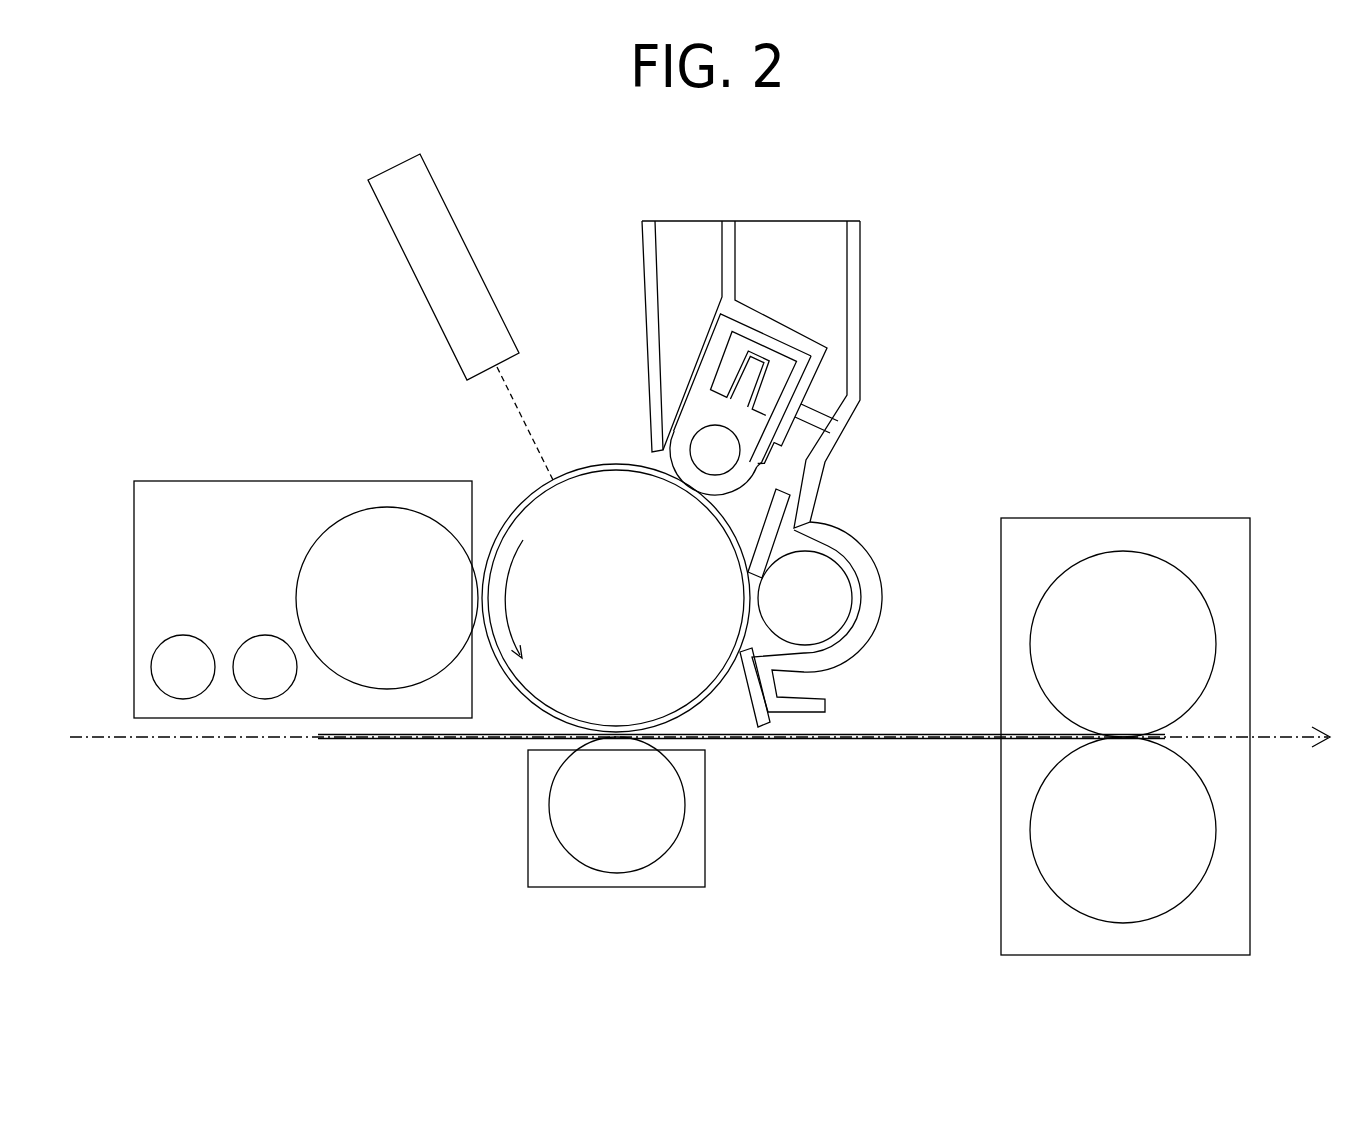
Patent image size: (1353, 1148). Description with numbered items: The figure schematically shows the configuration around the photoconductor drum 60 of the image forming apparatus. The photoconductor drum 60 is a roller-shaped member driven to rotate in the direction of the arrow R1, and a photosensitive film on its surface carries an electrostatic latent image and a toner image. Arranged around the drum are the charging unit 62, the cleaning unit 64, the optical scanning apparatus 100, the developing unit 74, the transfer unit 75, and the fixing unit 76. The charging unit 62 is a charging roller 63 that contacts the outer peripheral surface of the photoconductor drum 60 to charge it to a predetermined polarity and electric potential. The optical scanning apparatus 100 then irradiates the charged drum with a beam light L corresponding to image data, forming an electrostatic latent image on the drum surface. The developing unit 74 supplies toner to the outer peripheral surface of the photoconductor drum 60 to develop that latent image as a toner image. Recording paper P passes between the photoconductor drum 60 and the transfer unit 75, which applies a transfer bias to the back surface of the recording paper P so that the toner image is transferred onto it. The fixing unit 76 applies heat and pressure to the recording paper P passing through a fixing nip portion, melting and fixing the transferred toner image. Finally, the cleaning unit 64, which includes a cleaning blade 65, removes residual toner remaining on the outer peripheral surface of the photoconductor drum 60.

The optical scanning apparatus 100 is at (492, 230).
The beam light L is at (517, 397).
The developing unit 74 is at (368, 481).
The photoconductor drum 60 is at (605, 464).
The arrow R1 is at (532, 608).
The charging unit 62 is at (681, 491).
The charging roller 63 is at (697, 472).
The cleaning blade 65 is at (785, 505).
The cleaning unit 64 is at (860, 643).
The transfer unit 75 is at (705, 843).
The fixing unit 76 is at (1093, 518).
The recording paper P is at (430, 740).